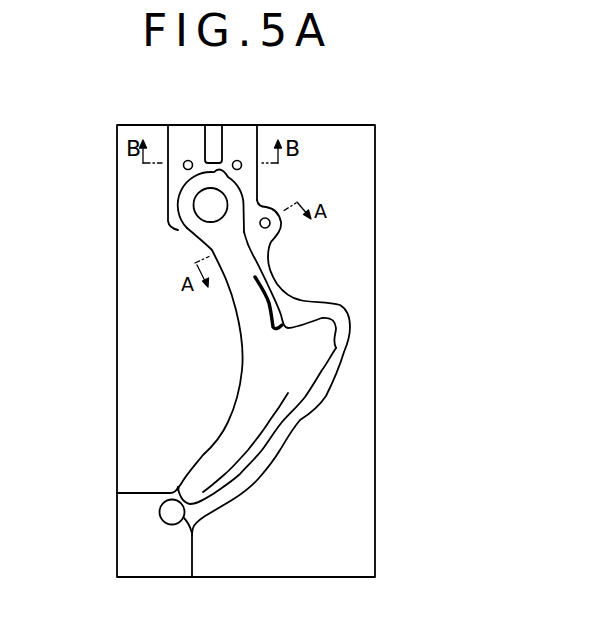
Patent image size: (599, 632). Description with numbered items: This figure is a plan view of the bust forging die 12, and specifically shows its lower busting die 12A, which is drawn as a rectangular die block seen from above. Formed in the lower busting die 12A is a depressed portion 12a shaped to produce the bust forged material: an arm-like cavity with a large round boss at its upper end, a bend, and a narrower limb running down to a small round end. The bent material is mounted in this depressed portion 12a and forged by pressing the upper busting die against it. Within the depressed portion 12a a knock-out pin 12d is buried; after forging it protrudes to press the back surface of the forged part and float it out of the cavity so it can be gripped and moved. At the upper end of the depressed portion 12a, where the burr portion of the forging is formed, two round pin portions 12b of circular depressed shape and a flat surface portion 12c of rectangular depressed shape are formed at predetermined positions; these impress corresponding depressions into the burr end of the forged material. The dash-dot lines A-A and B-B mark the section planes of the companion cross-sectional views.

The bust forging die 12 is at (308, 307).
The lower busting die 12A is at (308, 307).
The depressed portion 12a is at (221, 449).
The round pin portion 12b is at (184, 168).
The flat surface portion 12c is at (216, 137).
The knock-out pin 12d is at (270, 223).